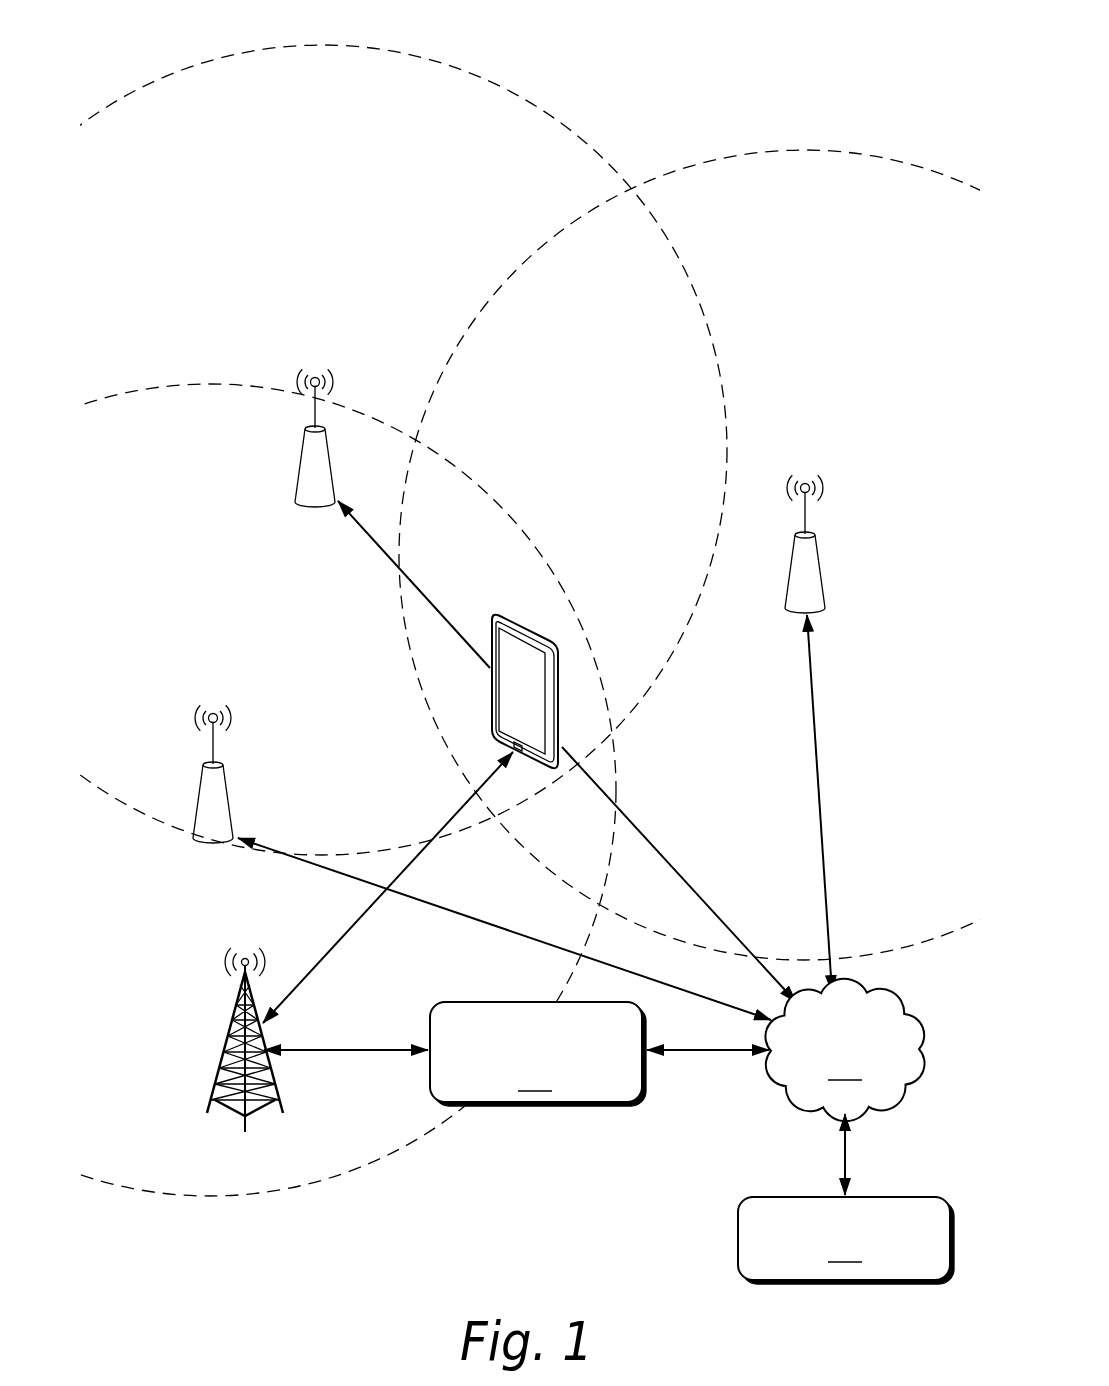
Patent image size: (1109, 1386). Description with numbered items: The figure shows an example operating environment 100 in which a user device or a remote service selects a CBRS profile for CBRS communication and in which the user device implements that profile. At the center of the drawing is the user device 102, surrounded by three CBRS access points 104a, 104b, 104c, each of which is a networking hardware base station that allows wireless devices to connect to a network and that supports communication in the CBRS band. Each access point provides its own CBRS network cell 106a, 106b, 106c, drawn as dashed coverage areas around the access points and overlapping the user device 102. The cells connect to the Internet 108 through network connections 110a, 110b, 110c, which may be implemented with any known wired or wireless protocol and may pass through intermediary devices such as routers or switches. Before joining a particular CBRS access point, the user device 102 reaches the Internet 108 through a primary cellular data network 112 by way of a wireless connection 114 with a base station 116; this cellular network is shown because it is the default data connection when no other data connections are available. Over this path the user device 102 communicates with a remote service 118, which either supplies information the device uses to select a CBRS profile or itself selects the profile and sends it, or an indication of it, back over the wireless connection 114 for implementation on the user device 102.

The operating environment 100 is at (841, 35).
The user device 102 is at (533, 621).
The CBRS access point 104a is at (231, 794).
The CBRS access point 104b is at (301, 455).
The CBRS access point 104c is at (821, 559).
The CBRS network cell 106a is at (218, 1199).
The CBRS network cell 106b is at (425, 58).
The CBRS network cell 106c is at (795, 153).
The Internet 108 is at (844, 1087).
The connection 110a is at (469, 914).
The connection 110b is at (663, 852).
The connection 110c is at (818, 755).
The primary cellular data network 112 is at (516, 1054).
The wireless connection 114 is at (325, 952).
The base station 116 is at (228, 1045).
The remote service 118 is at (846, 1240).